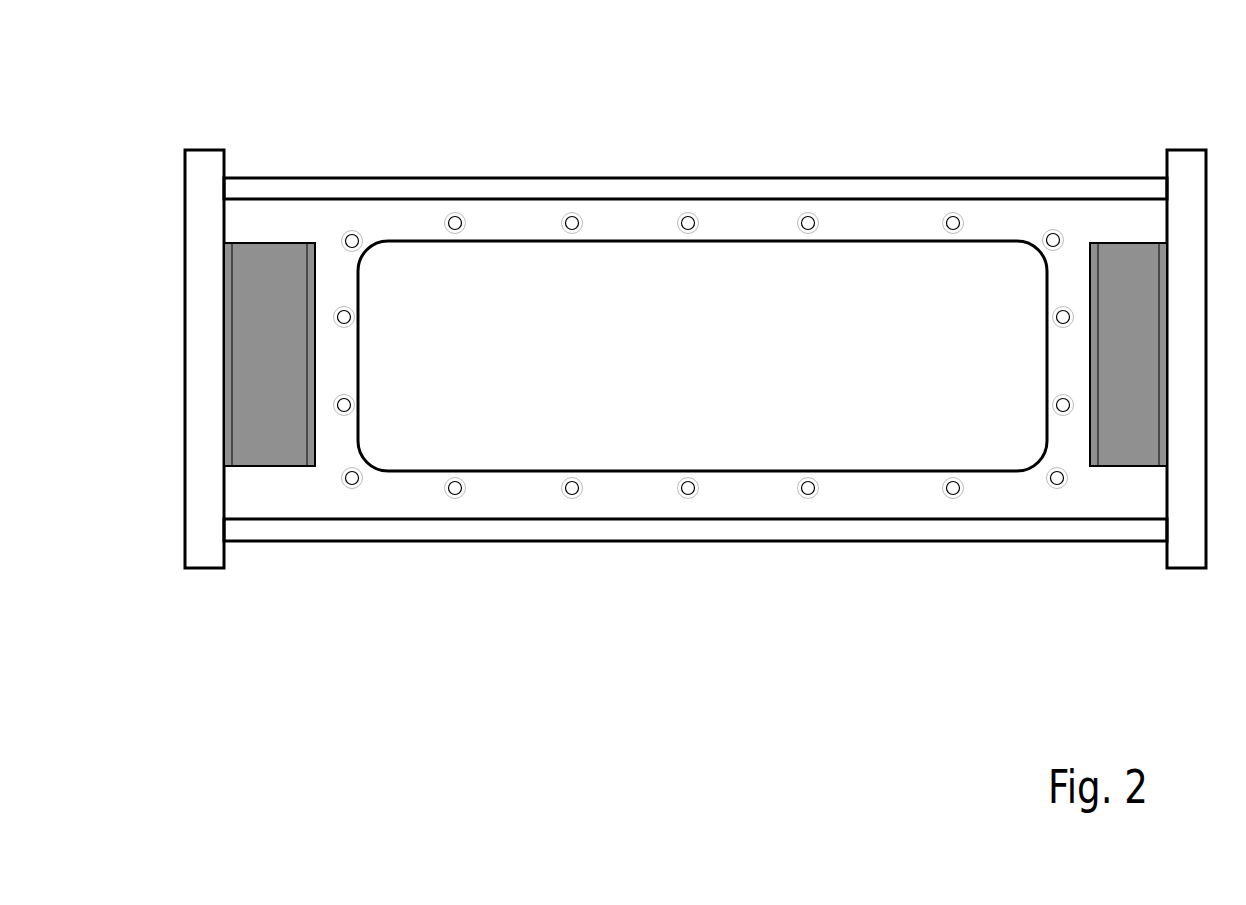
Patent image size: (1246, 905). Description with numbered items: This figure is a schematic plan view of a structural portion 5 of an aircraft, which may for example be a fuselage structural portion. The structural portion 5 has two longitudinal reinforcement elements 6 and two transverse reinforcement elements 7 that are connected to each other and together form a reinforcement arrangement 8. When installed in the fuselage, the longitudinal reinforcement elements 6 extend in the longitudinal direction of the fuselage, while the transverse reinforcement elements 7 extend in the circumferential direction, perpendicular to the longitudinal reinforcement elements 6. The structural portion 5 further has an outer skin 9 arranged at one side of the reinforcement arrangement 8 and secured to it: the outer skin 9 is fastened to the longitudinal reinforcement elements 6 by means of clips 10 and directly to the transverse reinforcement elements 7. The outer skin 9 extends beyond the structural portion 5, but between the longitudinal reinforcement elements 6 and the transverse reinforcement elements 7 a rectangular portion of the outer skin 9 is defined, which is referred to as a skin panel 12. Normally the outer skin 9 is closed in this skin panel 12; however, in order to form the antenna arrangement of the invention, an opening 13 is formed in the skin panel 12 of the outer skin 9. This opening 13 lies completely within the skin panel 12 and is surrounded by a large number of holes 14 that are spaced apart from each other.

The structural portion 5 is at (270, 90).
The longitudinal reinforcement elements 6 is at (887, 189).
The transverse reinforcement elements 7 is at (1182, 168).
The reinforcement arrangement 8 is at (170, 152).
The outer skin 9 is at (401, 212).
The clips 10 is at (270, 443).
The skin panel 12 is at (1078, 213).
The opening 13 is at (619, 474).
The holes 14 is at (459, 216).